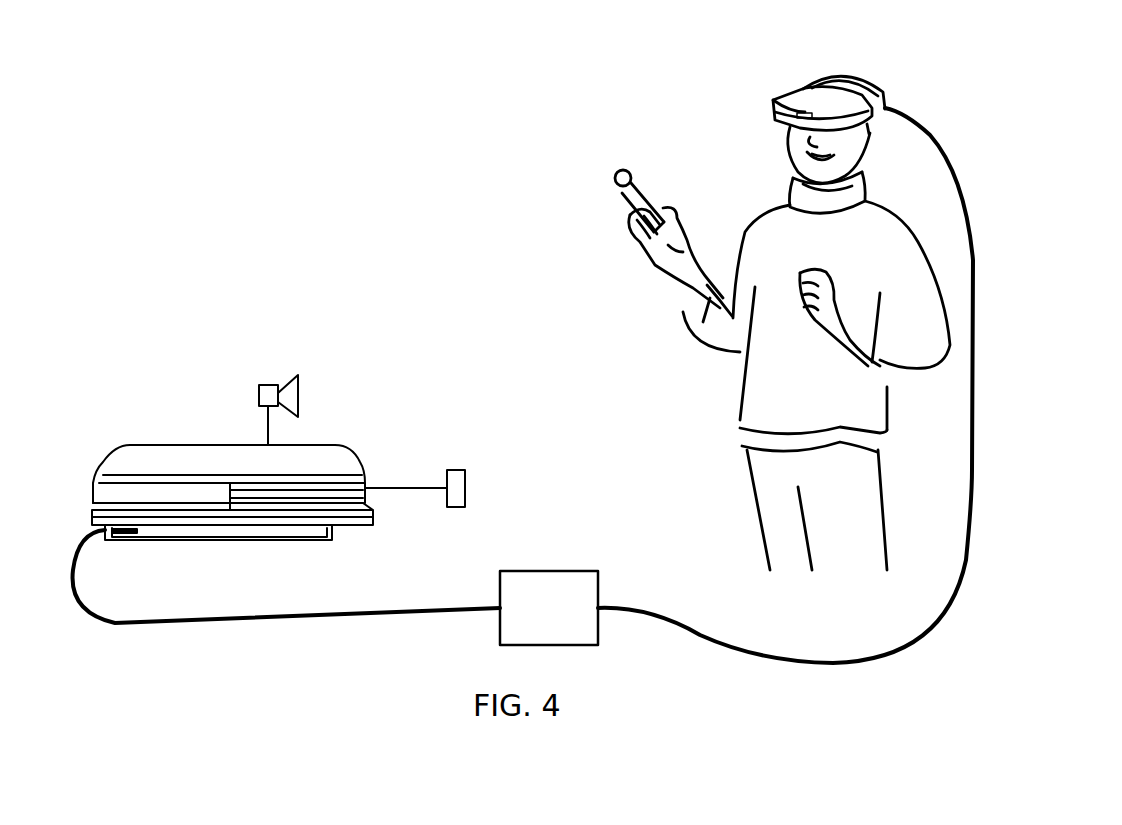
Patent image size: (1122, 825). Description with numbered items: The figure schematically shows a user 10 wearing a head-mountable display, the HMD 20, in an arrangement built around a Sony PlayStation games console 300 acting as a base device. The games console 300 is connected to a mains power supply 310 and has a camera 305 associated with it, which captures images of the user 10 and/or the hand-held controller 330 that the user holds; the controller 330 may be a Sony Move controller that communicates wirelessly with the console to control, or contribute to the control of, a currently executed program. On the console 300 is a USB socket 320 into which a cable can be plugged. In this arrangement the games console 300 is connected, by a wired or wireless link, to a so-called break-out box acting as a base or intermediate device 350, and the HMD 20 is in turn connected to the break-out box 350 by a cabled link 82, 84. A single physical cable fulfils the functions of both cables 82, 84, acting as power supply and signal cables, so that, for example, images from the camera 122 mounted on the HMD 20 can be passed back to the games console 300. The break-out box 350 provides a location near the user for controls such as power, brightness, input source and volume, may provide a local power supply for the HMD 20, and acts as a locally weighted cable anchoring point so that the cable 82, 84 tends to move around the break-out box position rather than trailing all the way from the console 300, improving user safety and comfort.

The user 10 is at (745, 218).
The HMD 20 is at (873, 108).
The camera 122 is at (776, 112).
The hand-held controller 330 is at (620, 172).
The games console 300 is at (185, 445).
The camera 305 is at (269, 385).
The mains power supply 310 is at (456, 470).
The USB socket 320 is at (125, 533).
The break-out box 350 is at (547, 571).
The cable 82 is at (523, 385).
The cable 84 is at (785, 627).